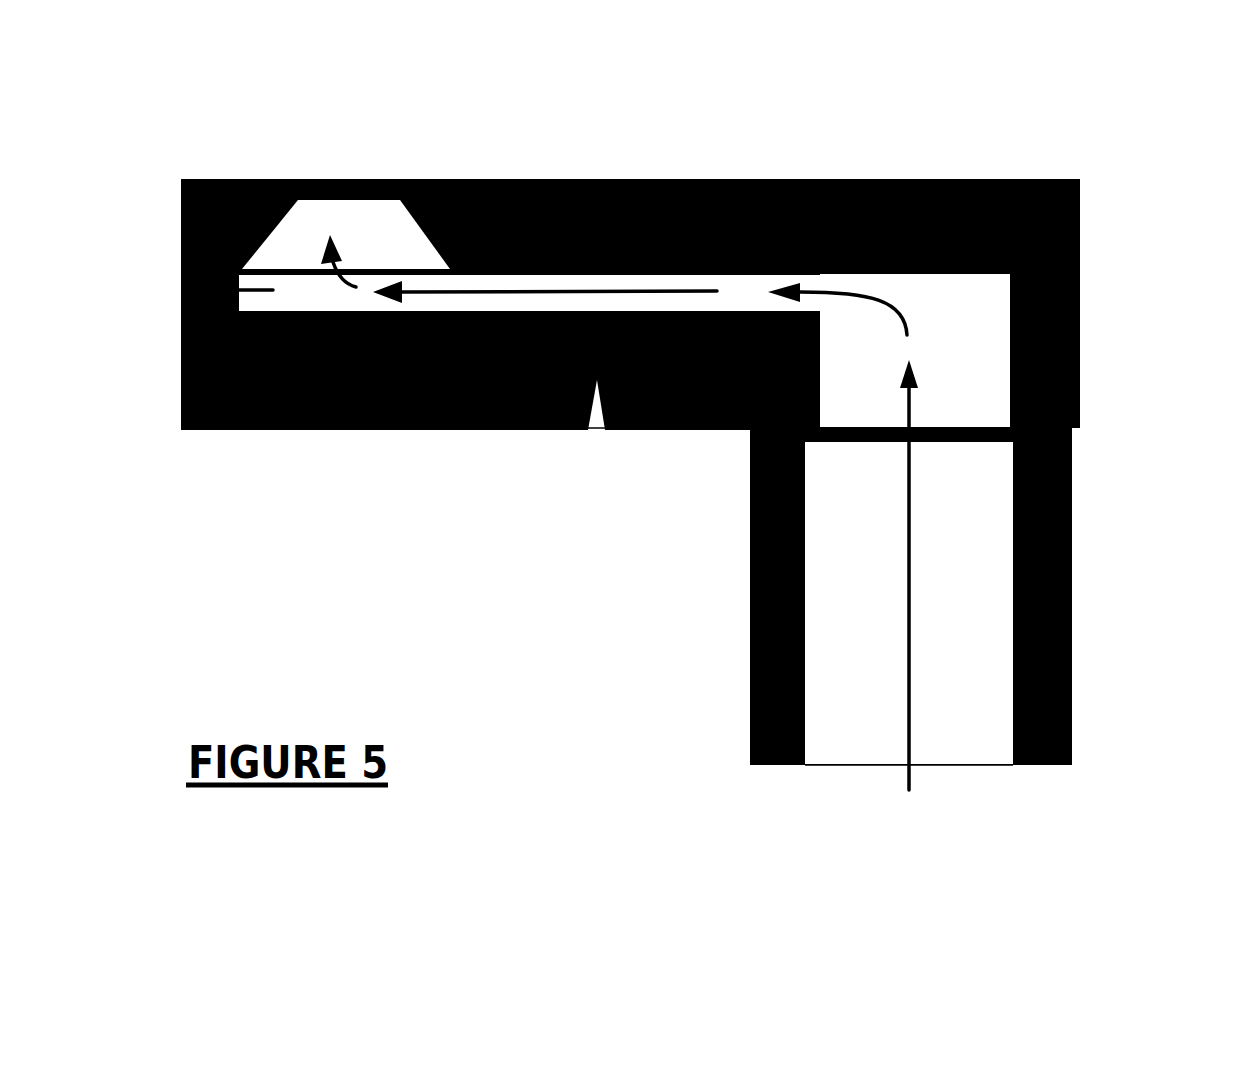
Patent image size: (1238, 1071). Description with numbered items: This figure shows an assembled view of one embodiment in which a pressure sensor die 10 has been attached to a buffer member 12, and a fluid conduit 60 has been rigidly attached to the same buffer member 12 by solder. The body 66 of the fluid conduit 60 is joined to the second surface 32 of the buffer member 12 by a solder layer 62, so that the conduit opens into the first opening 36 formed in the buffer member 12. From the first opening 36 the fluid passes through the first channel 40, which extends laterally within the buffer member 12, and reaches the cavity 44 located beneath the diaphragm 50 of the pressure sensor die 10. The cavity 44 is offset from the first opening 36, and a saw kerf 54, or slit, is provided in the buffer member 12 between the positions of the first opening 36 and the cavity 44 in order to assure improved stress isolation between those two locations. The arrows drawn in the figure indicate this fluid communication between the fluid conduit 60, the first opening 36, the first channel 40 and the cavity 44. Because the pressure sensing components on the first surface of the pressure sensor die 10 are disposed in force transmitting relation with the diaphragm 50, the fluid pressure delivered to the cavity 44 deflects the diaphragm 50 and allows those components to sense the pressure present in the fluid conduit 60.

The pressure sensor die 10 is at (918, 178).
The buffer member 12 is at (348, 432).
The second surface 32 is at (533, 430).
The first opening 36 is at (857, 400).
The first channel 40 is at (180, 312).
The cavity 44 is at (406, 242).
The diaphragm 50 is at (318, 179).
The saw kerf 54 is at (598, 413).
The fluid conduit 60 is at (976, 740).
The solder layer 62 is at (1072, 433).
The body 66 is at (1072, 687).